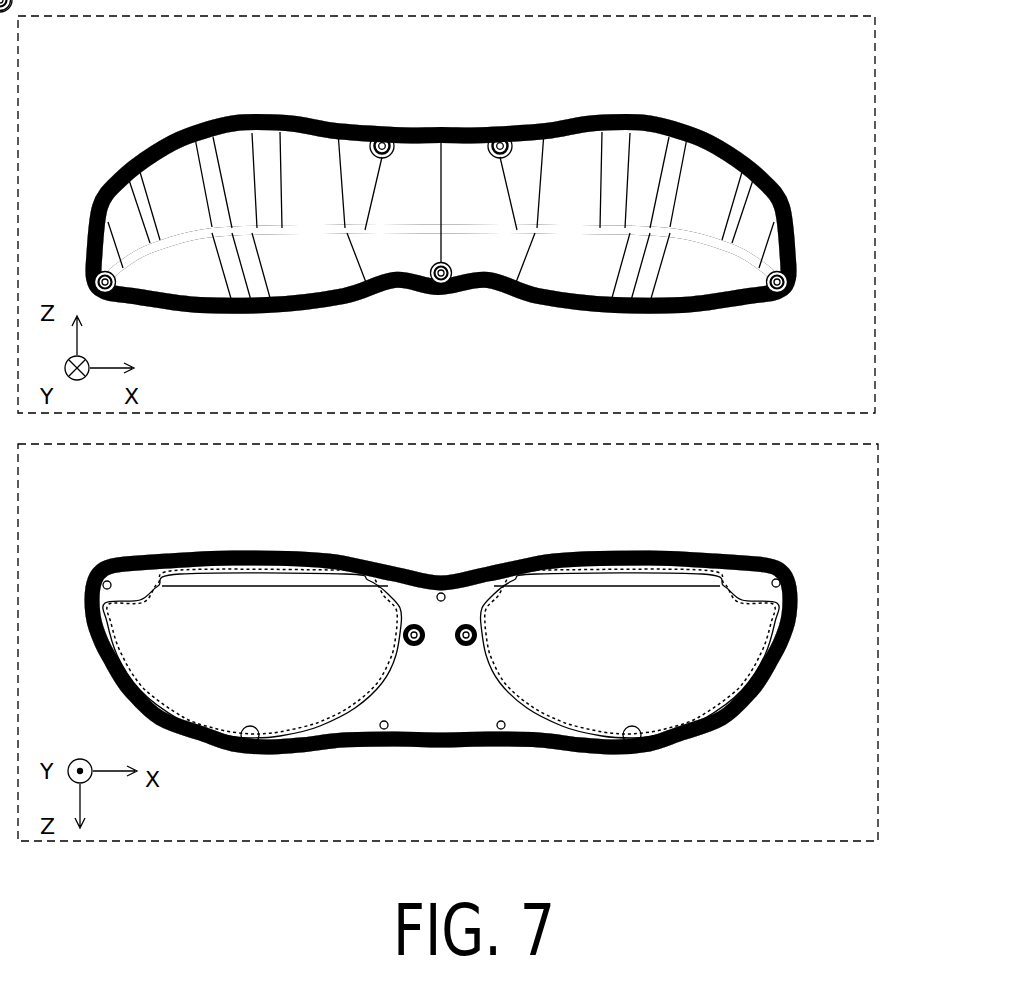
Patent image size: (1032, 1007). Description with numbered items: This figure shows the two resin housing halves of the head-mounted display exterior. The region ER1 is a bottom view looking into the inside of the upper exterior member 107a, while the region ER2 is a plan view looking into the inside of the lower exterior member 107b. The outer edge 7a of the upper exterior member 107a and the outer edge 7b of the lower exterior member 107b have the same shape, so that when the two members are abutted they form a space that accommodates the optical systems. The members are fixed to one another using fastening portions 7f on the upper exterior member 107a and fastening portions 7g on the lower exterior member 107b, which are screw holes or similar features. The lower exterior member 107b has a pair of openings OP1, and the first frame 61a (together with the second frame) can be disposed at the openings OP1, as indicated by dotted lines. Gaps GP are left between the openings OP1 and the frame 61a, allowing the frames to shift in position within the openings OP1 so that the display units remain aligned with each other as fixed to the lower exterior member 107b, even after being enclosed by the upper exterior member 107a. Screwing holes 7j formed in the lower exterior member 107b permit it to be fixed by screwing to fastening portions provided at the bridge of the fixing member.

The outer edge 7a is at (704, 130).
The outer edge 7b is at (711, 557).
The fastening portion 7f is at (384, 134).
The fastening portion 7g is at (108, 580).
The screwing hole 7j is at (415, 647).
The upper exterior member 107a is at (429, 157).
The lower exterior member 107b is at (467, 595).
The first frame 61a is at (252, 560).
The opening OP1 is at (248, 742).
The gap GP is at (334, 724).
The region ER1 is at (877, 96).
The region ER2 is at (878, 525).